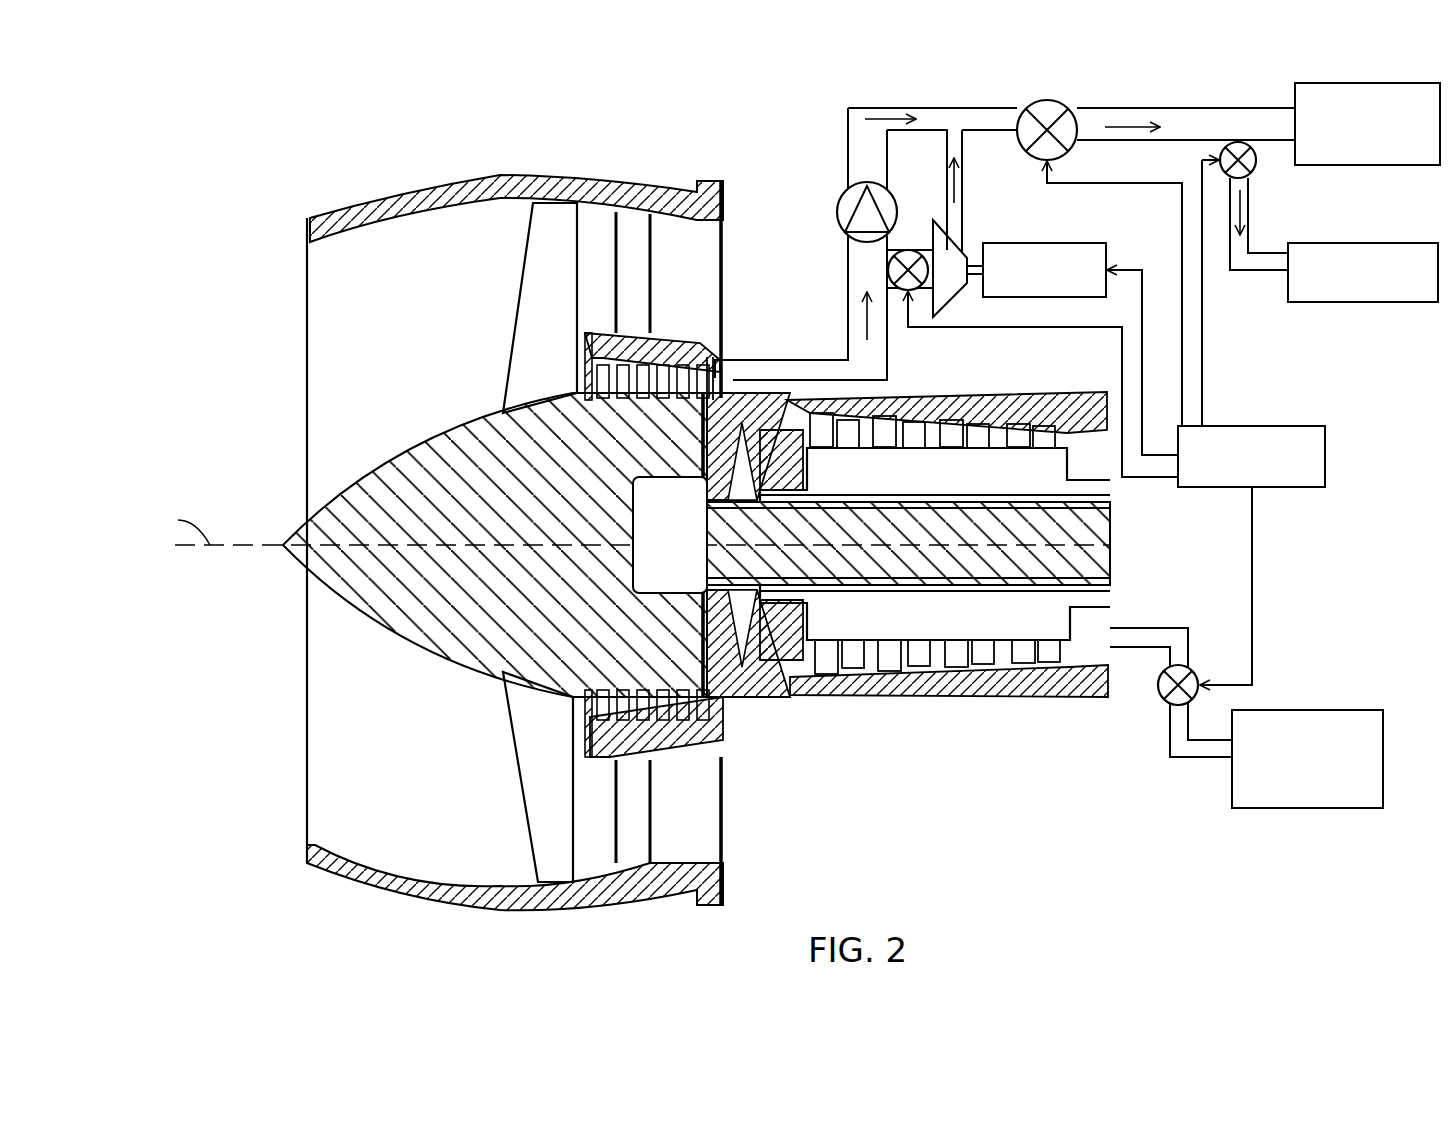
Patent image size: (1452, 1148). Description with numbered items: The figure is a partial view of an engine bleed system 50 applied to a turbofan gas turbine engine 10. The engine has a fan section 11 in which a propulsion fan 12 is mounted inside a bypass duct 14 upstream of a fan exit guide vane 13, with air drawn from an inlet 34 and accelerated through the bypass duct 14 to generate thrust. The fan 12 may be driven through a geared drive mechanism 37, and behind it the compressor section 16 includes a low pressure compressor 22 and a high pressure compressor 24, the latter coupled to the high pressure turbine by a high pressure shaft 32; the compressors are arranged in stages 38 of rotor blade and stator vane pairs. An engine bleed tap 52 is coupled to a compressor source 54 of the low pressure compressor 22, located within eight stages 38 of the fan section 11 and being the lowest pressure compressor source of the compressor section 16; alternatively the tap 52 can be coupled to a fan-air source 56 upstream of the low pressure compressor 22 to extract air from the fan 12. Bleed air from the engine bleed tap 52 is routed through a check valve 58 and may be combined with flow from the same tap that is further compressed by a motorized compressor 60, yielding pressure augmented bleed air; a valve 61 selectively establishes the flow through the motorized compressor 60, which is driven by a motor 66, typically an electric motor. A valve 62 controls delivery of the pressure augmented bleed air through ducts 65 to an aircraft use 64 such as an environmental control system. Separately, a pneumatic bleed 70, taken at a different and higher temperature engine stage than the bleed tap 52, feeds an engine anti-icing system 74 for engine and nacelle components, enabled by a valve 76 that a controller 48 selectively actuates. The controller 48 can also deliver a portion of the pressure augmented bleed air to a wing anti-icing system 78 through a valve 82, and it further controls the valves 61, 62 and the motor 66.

The gas turbine engine 10 is at (308, 166).
The fan section 11 is at (430, 133).
The propulsion fan 12 is at (520, 318).
The fan exit guide vane 13 is at (616, 205).
The bypass duct 14 is at (720, 283).
The compressor section 16 is at (1078, 770).
The low pressure compressor 22 is at (712, 722).
The high pressure compressor 24 is at (882, 695).
The high pressure shaft 32 is at (1052, 672).
The inlet 34 is at (325, 327).
The geared drive mechanism 37 is at (655, 570).
The stages 38 is at (590, 708).
The controller 48 is at (1325, 487).
The engine bleed system 50 is at (800, 100).
The engine bleed tap 52 is at (735, 378).
The compressor source 54 is at (702, 362).
The fan-air source 56 is at (592, 318).
The check valve 58 is at (840, 200).
The motorized compressor 60 is at (986, 220).
The valve 61 is at (908, 247).
The valve 62 is at (1047, 108).
The aircraft use 64 is at (1395, 168).
The ducts 65 is at (1107, 108).
The motor 66 is at (1045, 243).
The pneumatic bleed 70 is at (1108, 628).
The engine anti-icing system 74 is at (1260, 808).
The valve 76 is at (1163, 702).
The wing anti-icing system 78 is at (1322, 302).
The valve 82 is at (1253, 165).